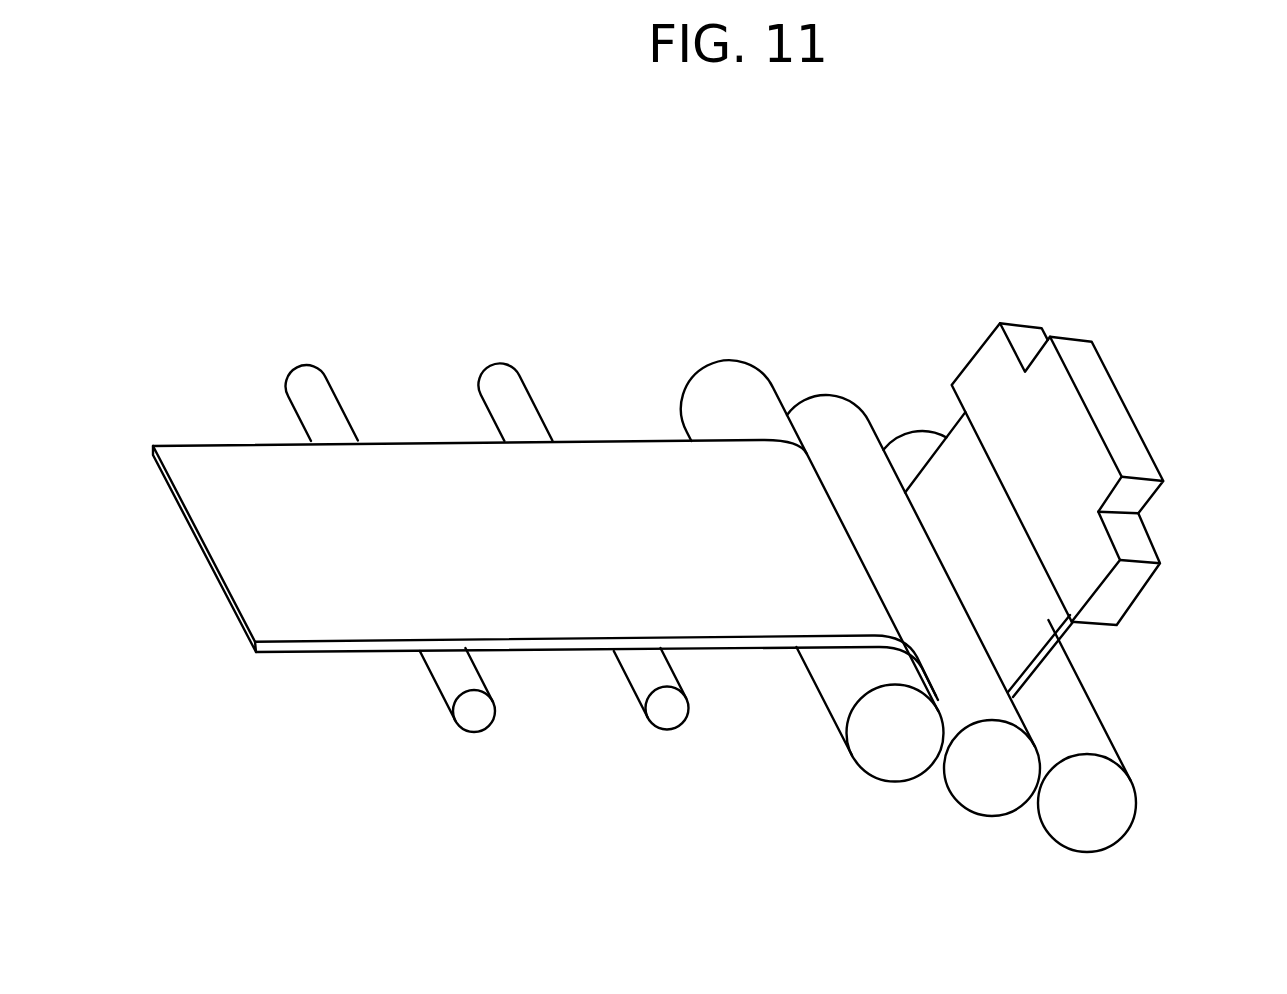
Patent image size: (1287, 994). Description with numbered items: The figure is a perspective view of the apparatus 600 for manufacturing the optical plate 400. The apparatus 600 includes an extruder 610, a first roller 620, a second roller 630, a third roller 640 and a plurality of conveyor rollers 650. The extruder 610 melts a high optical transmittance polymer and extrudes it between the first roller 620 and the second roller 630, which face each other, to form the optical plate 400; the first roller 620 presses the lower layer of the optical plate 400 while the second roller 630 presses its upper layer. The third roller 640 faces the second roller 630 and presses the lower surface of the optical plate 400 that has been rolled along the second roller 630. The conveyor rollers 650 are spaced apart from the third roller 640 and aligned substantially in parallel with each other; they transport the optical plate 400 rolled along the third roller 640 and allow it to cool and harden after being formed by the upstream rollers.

The optical plate 400 is at (291, 664).
The apparatus for manufacturing the optical plate 600 is at (1032, 449).
The extruder 610 is at (1124, 590).
The first roller 620 is at (1090, 830).
The second roller 630 is at (992, 793).
The third roller 640 is at (893, 755).
The conveyor rollers 650 is at (668, 712).